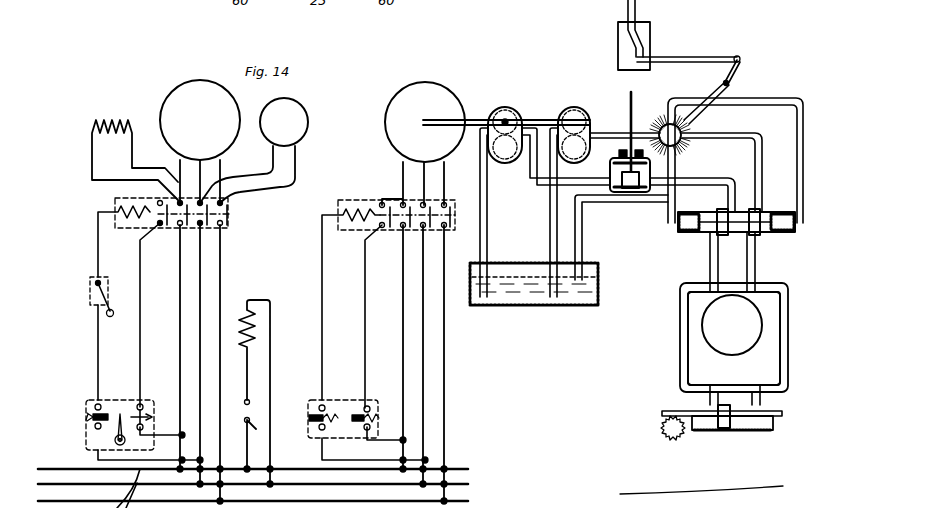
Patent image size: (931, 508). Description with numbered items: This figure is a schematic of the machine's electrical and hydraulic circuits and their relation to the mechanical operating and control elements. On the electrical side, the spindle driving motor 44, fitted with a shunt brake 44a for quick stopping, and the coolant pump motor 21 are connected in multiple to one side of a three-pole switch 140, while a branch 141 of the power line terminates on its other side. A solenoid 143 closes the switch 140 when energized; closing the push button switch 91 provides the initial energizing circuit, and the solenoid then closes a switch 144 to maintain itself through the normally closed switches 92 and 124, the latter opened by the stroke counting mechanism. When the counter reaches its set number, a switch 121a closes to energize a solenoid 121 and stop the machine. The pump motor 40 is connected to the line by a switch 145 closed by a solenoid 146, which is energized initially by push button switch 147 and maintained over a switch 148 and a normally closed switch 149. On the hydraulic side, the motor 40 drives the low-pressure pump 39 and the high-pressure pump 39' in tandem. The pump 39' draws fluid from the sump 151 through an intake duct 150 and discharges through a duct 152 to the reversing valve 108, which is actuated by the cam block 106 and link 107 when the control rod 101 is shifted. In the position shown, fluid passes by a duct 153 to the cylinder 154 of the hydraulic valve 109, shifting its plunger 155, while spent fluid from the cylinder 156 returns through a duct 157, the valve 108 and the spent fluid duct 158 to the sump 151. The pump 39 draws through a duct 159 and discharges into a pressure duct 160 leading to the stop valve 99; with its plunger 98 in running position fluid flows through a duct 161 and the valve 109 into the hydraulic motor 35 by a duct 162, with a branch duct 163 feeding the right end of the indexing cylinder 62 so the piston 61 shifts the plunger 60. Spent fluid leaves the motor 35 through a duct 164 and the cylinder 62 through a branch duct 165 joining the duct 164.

The coolant pump motor 21 is at (300, 112).
The hydraulic motor 35 is at (737, 350).
The low-pressure fluid pump 39 is at (506, 125).
The high-pressure pump 39' is at (580, 124).
The electric motor 40 is at (452, 105).
The spindle driving motor 44 is at (185, 101).
The shunt brake 44a is at (92, 118).
The plunger 60 is at (718, 416).
The hydraulic piston 61 is at (727, 428).
The cylinder 62 is at (757, 431).
The push button switch 91 is at (133, 402).
The push button switch 92 is at (91, 402).
The valve plunger 98 is at (636, 109).
The control valve 99 is at (623, 166).
The control rod 101 is at (637, 8).
The cam block 106 is at (643, 31).
The link 107 is at (680, 57).
The reversing valve 108 is at (703, 130).
The hydraulically actuated reversing valve 109 is at (701, 250).
The solenoid 121 is at (253, 332).
The switch 121a is at (258, 398).
The switch 124 is at (85, 295).
The three-pole switch 140 is at (233, 219).
The branch 141 is at (180, 272).
The solenoid 143 is at (118, 208).
The switch 144 is at (168, 234).
The switch 145 is at (455, 231).
The solenoid 146 is at (357, 193).
The push button switch 147 is at (377, 402).
The switch 148 is at (391, 237).
The switch 149 is at (317, 431).
The intake duct 150 is at (548, 228).
The sump 151 is at (525, 294).
The discharge duct 152 is at (622, 122).
The duct 153 is at (680, 168).
The cylinder 154 is at (695, 242).
The plunger 155 is at (765, 233).
The cylinder 156 is at (792, 208).
The duct 157 is at (772, 100).
The spent fluid duct 158 is at (640, 203).
The duct 159 is at (485, 216).
The pressure duct 160 is at (531, 168).
The duct 161 is at (713, 181).
The duct 162 is at (752, 270).
The branch duct 163 is at (785, 300).
The duct 164 is at (710, 268).
The branch duct 165 is at (686, 357).